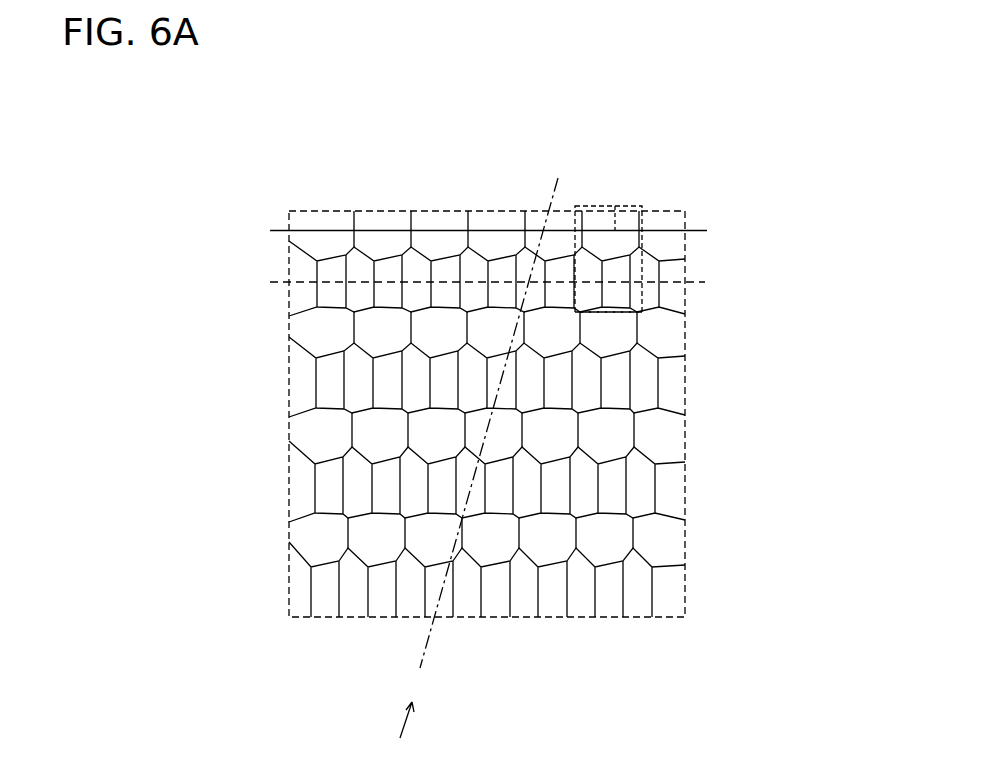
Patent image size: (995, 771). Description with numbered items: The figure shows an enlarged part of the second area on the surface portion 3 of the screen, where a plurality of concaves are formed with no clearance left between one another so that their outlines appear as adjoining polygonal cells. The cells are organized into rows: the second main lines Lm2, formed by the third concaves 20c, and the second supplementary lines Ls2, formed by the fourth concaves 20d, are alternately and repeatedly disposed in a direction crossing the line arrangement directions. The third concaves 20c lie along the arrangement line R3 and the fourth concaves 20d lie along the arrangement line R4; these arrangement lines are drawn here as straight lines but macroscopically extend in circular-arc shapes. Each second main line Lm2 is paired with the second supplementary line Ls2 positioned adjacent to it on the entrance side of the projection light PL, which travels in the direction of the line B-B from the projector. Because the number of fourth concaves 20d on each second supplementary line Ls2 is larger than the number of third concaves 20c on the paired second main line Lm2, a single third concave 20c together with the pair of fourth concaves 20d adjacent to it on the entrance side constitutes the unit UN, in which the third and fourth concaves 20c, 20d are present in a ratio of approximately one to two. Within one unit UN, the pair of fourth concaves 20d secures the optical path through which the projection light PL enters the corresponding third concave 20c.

The surface portion 3 is at (698, 158).
The third concave 20c is at (668, 228).
The fourth concave 20d is at (647, 265).
The second main line Lm2 is at (244, 223).
The second supplementary line Ls2 is at (244, 289).
The arrangement line R3 is at (618, 207).
The arrangement line R4 is at (673, 287).
The unit UN is at (597, 206).
The line B- B is at (485, 422).
The projection light PL is at (403, 735).